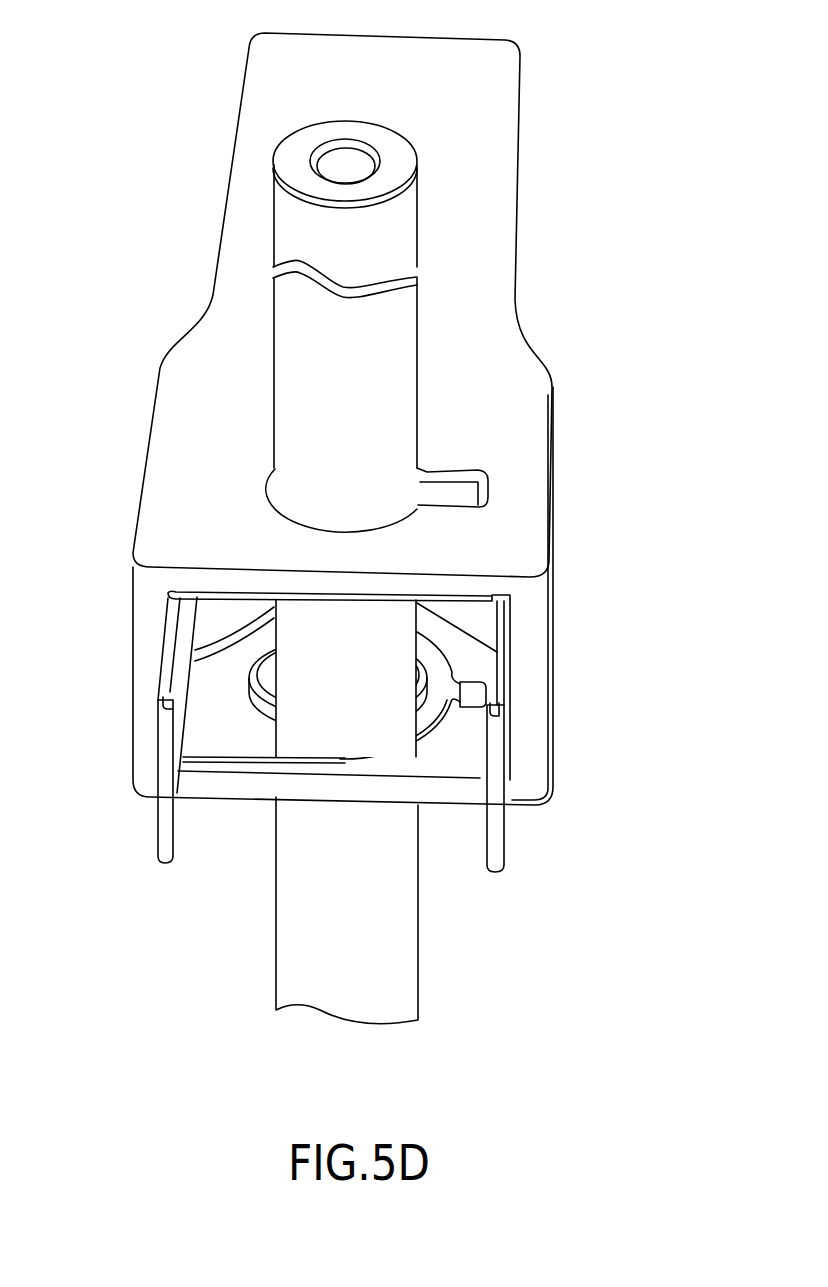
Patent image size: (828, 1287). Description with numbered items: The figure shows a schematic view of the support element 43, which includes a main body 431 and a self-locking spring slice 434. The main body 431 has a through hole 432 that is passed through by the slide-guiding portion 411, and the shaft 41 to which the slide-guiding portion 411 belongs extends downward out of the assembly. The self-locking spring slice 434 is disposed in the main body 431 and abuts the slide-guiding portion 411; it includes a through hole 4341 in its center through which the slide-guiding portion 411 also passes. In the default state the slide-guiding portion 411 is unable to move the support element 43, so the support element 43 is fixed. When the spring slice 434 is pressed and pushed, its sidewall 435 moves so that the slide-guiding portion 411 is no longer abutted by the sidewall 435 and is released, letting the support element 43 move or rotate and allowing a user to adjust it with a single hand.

The shaft 41 is at (272, 885).
The slide-guiding portion 411 is at (305, 393).
The support element 43 is at (520, 431).
The main body 431 is at (495, 147).
The through hole 432 is at (266, 484).
The self-locking spring slice 434 is at (232, 735).
The through hole 4341 is at (265, 677).
The sidewall 435 is at (276, 708).